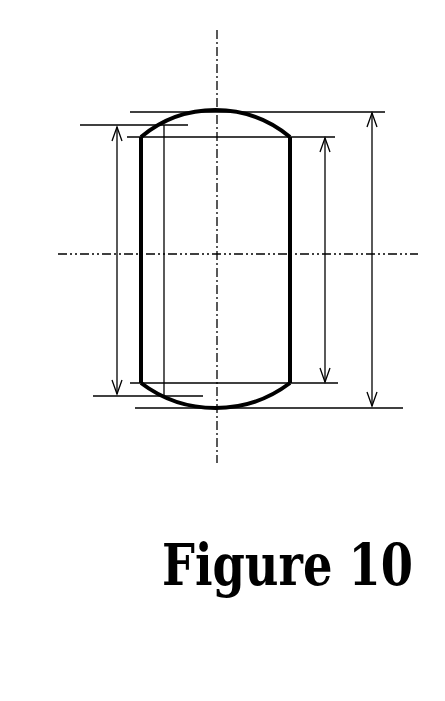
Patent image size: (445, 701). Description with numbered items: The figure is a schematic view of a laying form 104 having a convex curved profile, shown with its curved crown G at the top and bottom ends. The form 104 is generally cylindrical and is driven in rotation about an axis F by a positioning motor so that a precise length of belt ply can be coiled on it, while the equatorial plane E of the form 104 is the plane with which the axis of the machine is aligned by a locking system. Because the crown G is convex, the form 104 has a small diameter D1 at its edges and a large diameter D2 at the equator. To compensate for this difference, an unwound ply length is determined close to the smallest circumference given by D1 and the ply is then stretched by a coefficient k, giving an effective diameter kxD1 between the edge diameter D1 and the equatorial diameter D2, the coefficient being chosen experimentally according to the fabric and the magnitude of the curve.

The laying form 104 is at (174, 230).
The curved crown G is at (268, 120).
The equatorial plane E is at (246, 261).
The axis of rotation F is at (251, 233).
The small diameter D1 is at (140, 260).
The stretched diameter k×D1 kxD1 is at (232, 260).
The large diameter D2 is at (268, 260).